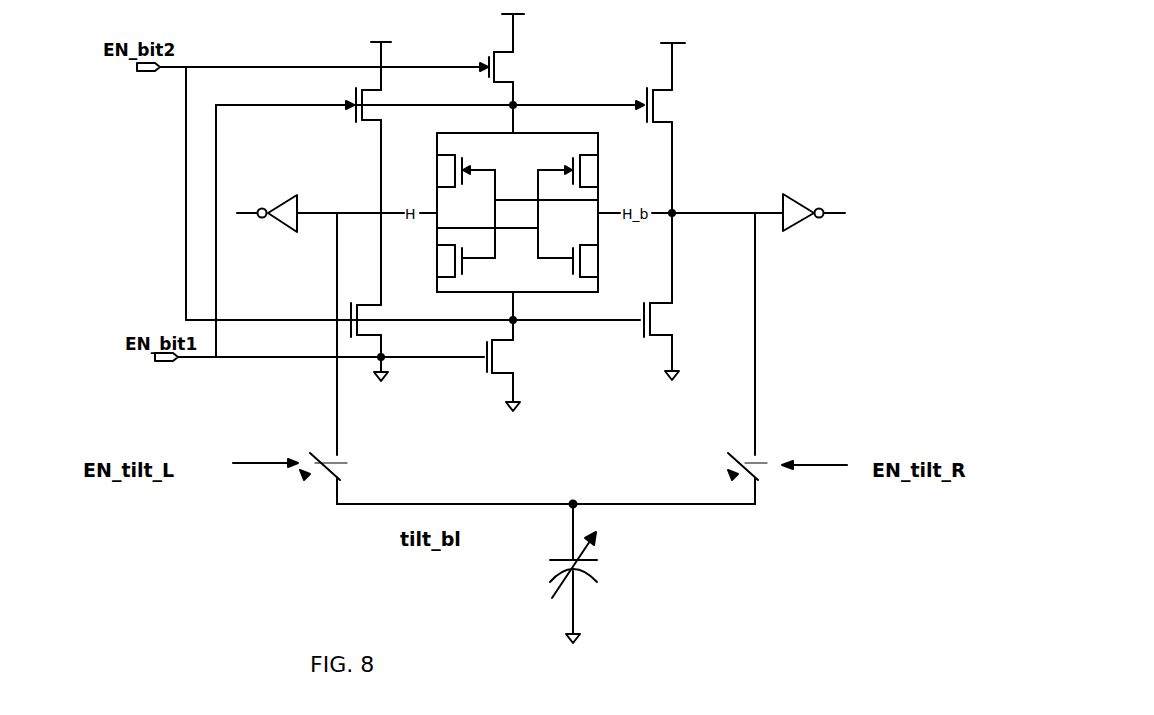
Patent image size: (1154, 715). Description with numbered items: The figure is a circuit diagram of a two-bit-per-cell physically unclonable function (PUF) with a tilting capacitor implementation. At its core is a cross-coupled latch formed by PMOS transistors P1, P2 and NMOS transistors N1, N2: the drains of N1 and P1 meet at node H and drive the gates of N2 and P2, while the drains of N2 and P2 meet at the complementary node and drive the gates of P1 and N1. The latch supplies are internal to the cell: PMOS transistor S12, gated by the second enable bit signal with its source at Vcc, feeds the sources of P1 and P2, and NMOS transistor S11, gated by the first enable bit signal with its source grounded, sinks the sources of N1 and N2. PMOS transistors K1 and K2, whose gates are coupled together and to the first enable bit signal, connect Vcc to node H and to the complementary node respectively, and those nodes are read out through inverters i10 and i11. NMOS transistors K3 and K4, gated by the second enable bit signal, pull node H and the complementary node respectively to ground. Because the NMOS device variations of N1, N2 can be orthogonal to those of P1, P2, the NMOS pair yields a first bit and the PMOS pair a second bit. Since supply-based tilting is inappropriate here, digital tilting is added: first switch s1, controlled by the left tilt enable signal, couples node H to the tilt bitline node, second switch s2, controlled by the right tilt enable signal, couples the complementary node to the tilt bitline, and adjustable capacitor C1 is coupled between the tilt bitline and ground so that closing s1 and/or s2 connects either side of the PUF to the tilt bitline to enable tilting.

The PMOS transistor S12 is at (507, 73).
The NMOS transistor S11 is at (512, 375).
The PMOS transistor K1 is at (377, 173).
The PMOS transistor K2 is at (666, 129).
The NMOS transistor K3 is at (378, 341).
The NMOS transistor K4 is at (666, 296).
The PMOS transistor P1 is at (457, 171).
The PMOS transistor P2 is at (577, 171).
The NMOS transistor N1 is at (460, 261).
The NMOS transistor N2 is at (576, 261).
The inverter i10 is at (267, 204).
The inverter i11 is at (814, 204).
The first switch s1 is at (313, 474).
The second switch s2 is at (761, 473).
The adjustable capacitor C1 is at (597, 573).